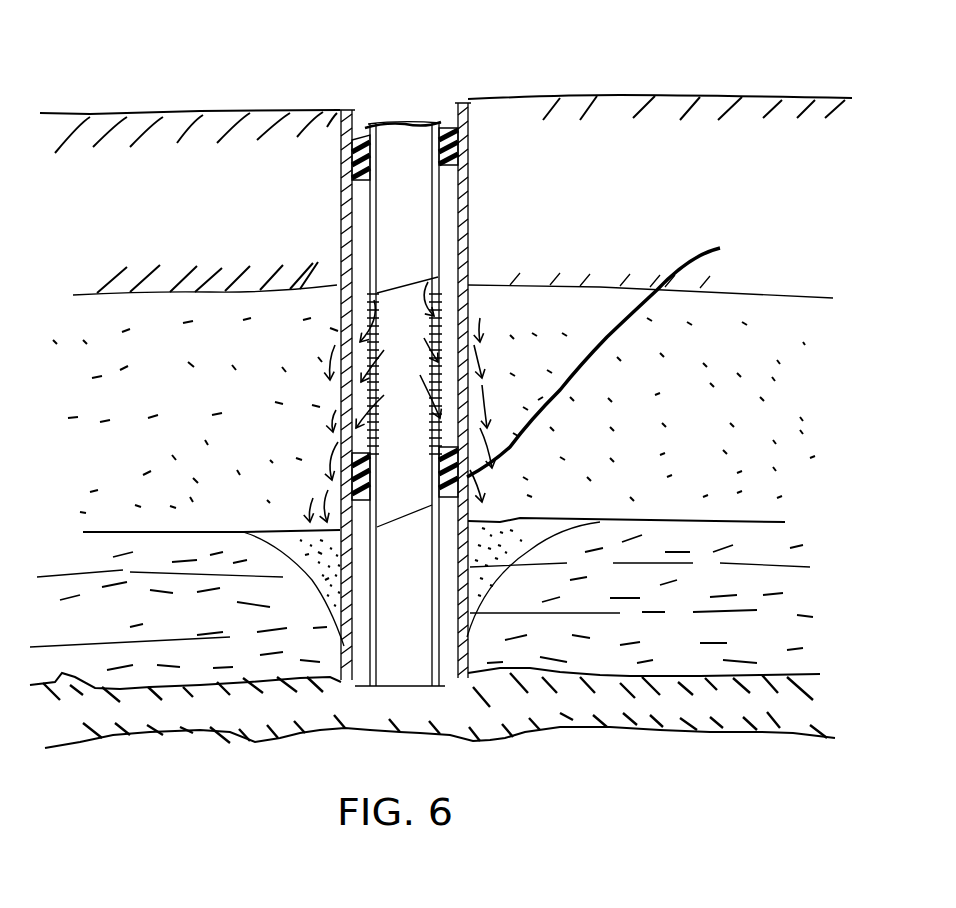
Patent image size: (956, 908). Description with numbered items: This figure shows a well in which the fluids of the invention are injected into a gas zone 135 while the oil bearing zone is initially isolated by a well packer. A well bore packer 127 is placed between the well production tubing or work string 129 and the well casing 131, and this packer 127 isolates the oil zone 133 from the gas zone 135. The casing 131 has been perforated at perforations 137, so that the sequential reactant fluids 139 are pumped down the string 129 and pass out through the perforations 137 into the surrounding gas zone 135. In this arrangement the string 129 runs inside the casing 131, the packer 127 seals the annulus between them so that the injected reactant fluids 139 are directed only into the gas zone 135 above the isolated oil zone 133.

The well bore packer 127 is at (623, 350).
The well production tubing or work string 129 is at (385, 158).
The well casing 131 is at (473, 183).
The oil zone 133 is at (745, 575).
The gas zone 135 is at (762, 352).
The perforations 137 is at (480, 300).
The sequential reactant fluids 139 is at (462, 250).